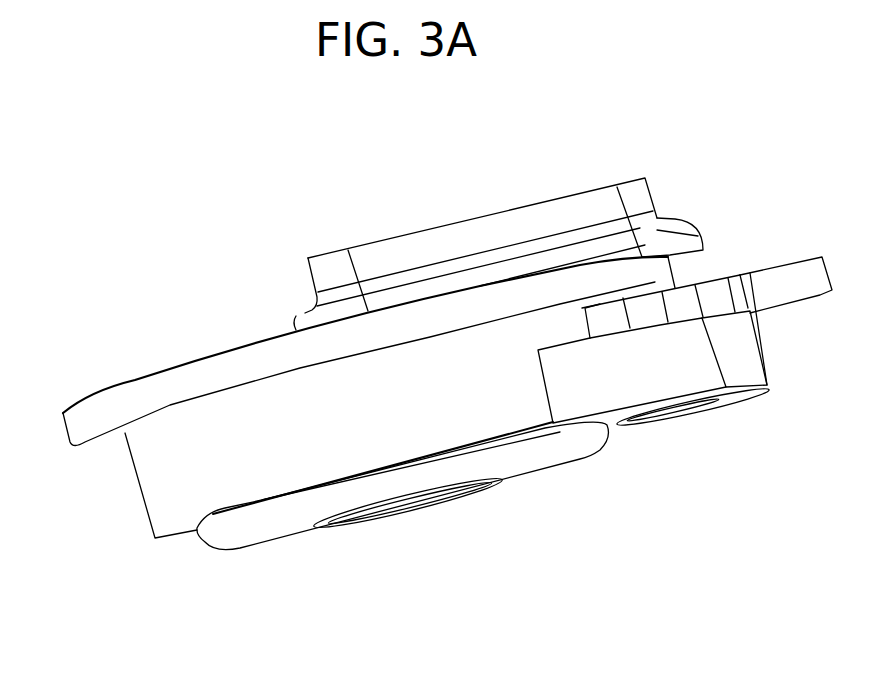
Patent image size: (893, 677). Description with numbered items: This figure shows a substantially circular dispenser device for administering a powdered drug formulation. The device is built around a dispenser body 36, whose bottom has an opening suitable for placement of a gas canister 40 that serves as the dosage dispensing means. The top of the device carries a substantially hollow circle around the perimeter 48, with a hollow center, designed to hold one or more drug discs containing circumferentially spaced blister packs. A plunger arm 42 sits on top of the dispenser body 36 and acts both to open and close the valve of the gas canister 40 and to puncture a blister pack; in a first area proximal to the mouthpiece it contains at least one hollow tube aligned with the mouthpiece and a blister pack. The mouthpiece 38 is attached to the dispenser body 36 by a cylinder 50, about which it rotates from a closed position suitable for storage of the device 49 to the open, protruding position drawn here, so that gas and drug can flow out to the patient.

The dispenser body 36 is at (49, 403).
The mouthpiece 38 is at (827, 263).
The gas canister 40 is at (242, 527).
The plunger arm 42 is at (588, 190).
The hollow circle around the perimeter 48 is at (90, 410).
The closed position for storage of the device 49 is at (597, 318).
The cylinder 50 is at (690, 413).